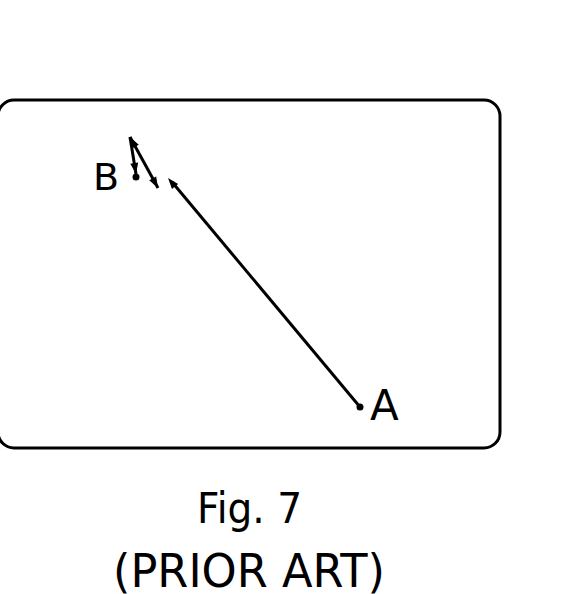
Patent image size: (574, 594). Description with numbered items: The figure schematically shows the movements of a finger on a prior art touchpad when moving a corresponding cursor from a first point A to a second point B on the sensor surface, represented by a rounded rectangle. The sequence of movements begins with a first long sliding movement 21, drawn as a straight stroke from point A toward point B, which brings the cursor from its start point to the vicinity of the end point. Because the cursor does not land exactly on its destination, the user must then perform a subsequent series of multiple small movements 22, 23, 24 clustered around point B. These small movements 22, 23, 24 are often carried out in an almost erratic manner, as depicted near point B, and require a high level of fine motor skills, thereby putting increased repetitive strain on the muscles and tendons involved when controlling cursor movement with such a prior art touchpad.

The first long sliding movement 21 is at (270, 292).
The small movement 22 is at (161, 179).
The small movement 23 is at (145, 162).
The small movement 24 is at (130, 149).